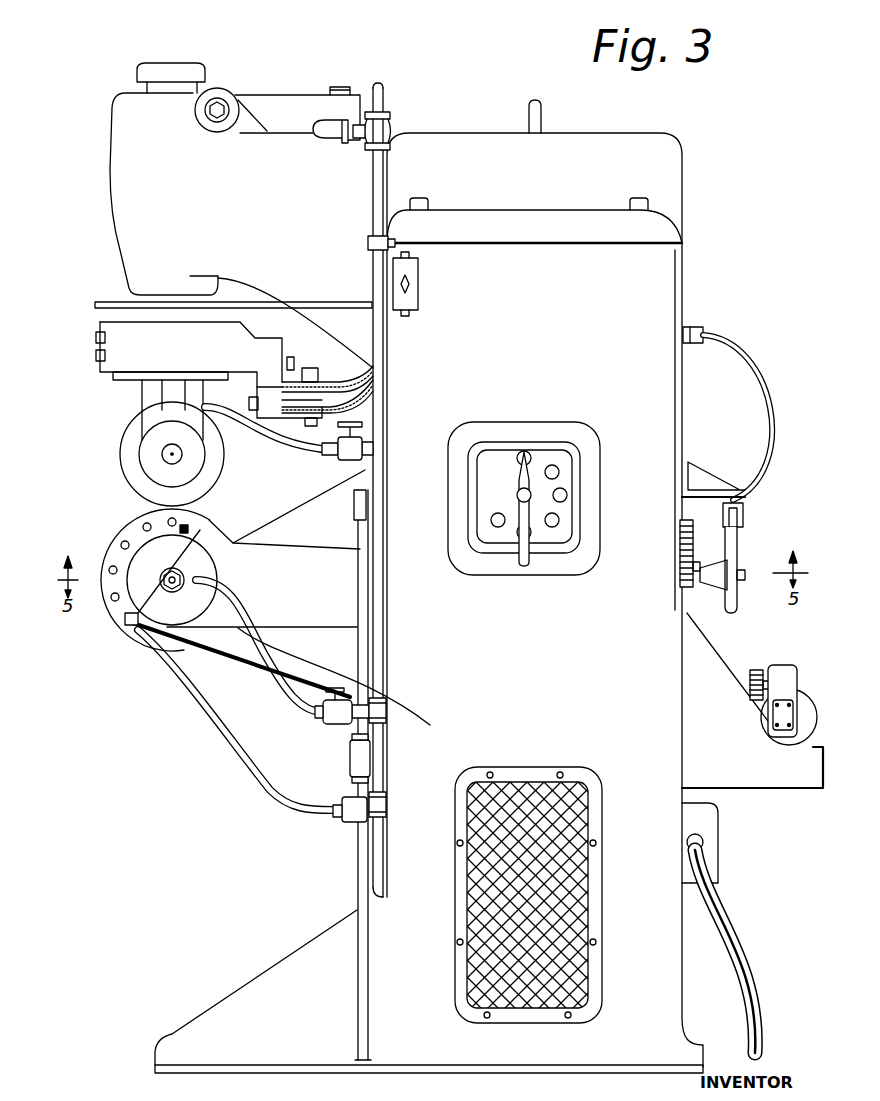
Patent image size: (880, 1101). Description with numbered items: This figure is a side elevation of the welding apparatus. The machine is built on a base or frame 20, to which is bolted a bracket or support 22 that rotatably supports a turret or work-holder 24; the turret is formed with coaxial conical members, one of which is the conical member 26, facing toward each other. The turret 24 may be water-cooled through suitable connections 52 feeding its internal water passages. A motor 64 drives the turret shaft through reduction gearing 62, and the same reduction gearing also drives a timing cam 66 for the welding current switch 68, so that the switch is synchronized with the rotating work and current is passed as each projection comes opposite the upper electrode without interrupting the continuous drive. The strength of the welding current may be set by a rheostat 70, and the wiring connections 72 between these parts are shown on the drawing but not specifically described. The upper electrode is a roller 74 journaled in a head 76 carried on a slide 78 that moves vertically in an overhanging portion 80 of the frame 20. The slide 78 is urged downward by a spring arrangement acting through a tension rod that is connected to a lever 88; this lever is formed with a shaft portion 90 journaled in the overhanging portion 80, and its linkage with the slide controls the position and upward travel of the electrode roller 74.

The base or frame 20 is at (632, 280).
The bracket or support 22 is at (288, 607).
The turret or work-holder 24 is at (123, 643).
The conical member 26 is at (122, 608).
The water connections 52 is at (365, 609).
The reduction gearing 62 is at (747, 683).
The motor 64 is at (805, 720).
The timing cam 66 is at (737, 557).
The welding current switch 68 is at (743, 512).
The rheostat 70 is at (520, 495).
The wiring connections 72 is at (370, 380).
The electrode roller 74 is at (130, 450).
The head 76 is at (152, 395).
The slide 78 is at (203, 63).
The overhanging portion 80 is at (152, 203).
The lever 88 is at (275, 117).
The shaft portion 90 is at (217, 122).